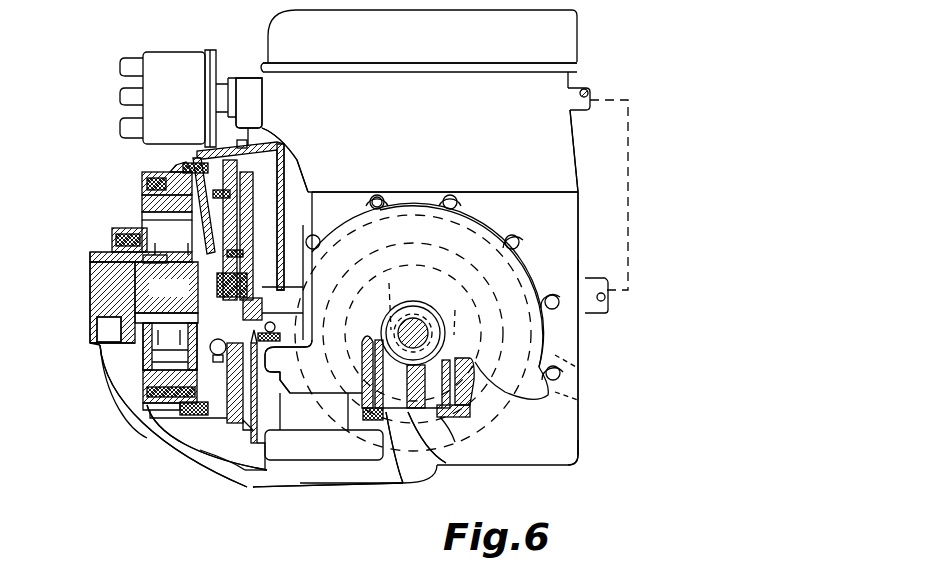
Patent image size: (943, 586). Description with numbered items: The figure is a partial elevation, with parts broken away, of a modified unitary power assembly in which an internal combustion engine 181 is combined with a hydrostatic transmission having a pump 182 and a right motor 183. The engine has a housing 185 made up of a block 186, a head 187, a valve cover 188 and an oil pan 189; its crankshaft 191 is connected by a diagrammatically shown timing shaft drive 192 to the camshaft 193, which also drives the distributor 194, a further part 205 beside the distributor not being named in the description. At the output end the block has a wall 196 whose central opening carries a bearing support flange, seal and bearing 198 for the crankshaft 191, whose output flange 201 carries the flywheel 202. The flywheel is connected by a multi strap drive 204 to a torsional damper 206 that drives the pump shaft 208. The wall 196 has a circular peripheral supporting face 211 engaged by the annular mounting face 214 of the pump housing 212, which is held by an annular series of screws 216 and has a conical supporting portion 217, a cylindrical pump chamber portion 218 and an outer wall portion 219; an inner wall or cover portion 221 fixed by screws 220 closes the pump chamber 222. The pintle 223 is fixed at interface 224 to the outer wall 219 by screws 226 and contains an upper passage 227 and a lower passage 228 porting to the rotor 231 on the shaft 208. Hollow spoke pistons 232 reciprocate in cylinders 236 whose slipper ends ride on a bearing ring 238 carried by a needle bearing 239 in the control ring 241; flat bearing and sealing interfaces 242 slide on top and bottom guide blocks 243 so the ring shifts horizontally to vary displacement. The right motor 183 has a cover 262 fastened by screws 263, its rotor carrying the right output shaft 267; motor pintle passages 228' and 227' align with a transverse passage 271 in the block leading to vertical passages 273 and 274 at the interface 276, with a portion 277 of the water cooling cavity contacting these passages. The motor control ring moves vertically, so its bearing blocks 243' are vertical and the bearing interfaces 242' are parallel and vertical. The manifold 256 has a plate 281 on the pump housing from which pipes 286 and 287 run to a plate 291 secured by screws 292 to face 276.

The internal combustion engine 181 is at (590, 347).
The pump 182 is at (84, 262).
The right motor 183 is at (411, 188).
The housing 185 is at (585, 222).
The block 186 is at (583, 267).
The head 187 is at (578, 153).
The valve cover 188 is at (575, 53).
The oil pan 189 is at (582, 450).
The crankshaft 191 is at (325, 318).
The timing shaft drive 192 is at (628, 198).
The camshaft 193 is at (580, 92).
The distributor 194 is at (122, 96).
The wall 196 is at (280, 182).
The bearing support flange, seal and bearing 198 is at (340, 222).
The output flange 201 is at (248, 250).
The flywheel 202 is at (279, 181).
The multi strap drive 204 is at (207, 151).
The distributor drive housing 205 is at (249, 103).
The torsional damper 206 is at (318, 358).
The pump shaft 208 is at (262, 328).
The circular peripheral supporting face 211 is at (232, 462).
The pump housing 212 is at (165, 418).
The annular mounting face 214 is at (252, 448).
The screws 216 is at (240, 432).
The conical supporting portion 217 is at (190, 418).
The cylindrical pump chamber portion 218 is at (168, 410).
The outer wall portion 219 is at (100, 343).
The screws 220 is at (190, 416).
The inner wall or cover portion 221 is at (230, 232).
The chamber 222 is at (148, 236).
The pintle 223 is at (135, 305).
The interface 224 is at (145, 275).
The screws 226 is at (112, 244).
The upper passage 227 is at (91, 302).
The lower passage 228 is at (125, 370).
The rotor 231 is at (168, 260).
The hollow spoke pistons 232 is at (148, 392).
The cylinders 236 is at (168, 325).
The bearing ring 238 is at (318, 372).
The needle bearing 239 is at (322, 440).
The control ring 241 is at (142, 202).
The bearing and sealing interfaces 242 is at (135, 181).
The guide blocks 243 is at (158, 159).
The manifold 256 is at (317, 490).
The outer housing or cover 262 is at (473, 200).
The screws 263 is at (371, 195).
The right output shaft 267 is at (247, 287).
The transverse horizontal power circuit passage 271 is at (362, 388).
The vertical passage 273 is at (456, 417).
The vertical passage 274 is at (363, 408).
The interface portion 276 is at (468, 414).
The water cooling cavity portion 277 is at (470, 364).
The plate 281 is at (98, 365).
The pipe 286 is at (105, 400).
The pipe 287 is at (345, 476).
The plate 291 is at (398, 435).
The screws 292 is at (385, 412).
The motor pintle passage 227' is at (415, 309).
The motor pintle passage 228' is at (429, 327).
The bearing interfaces 242' is at (596, 369).
The bearing blocks 243' is at (596, 405).